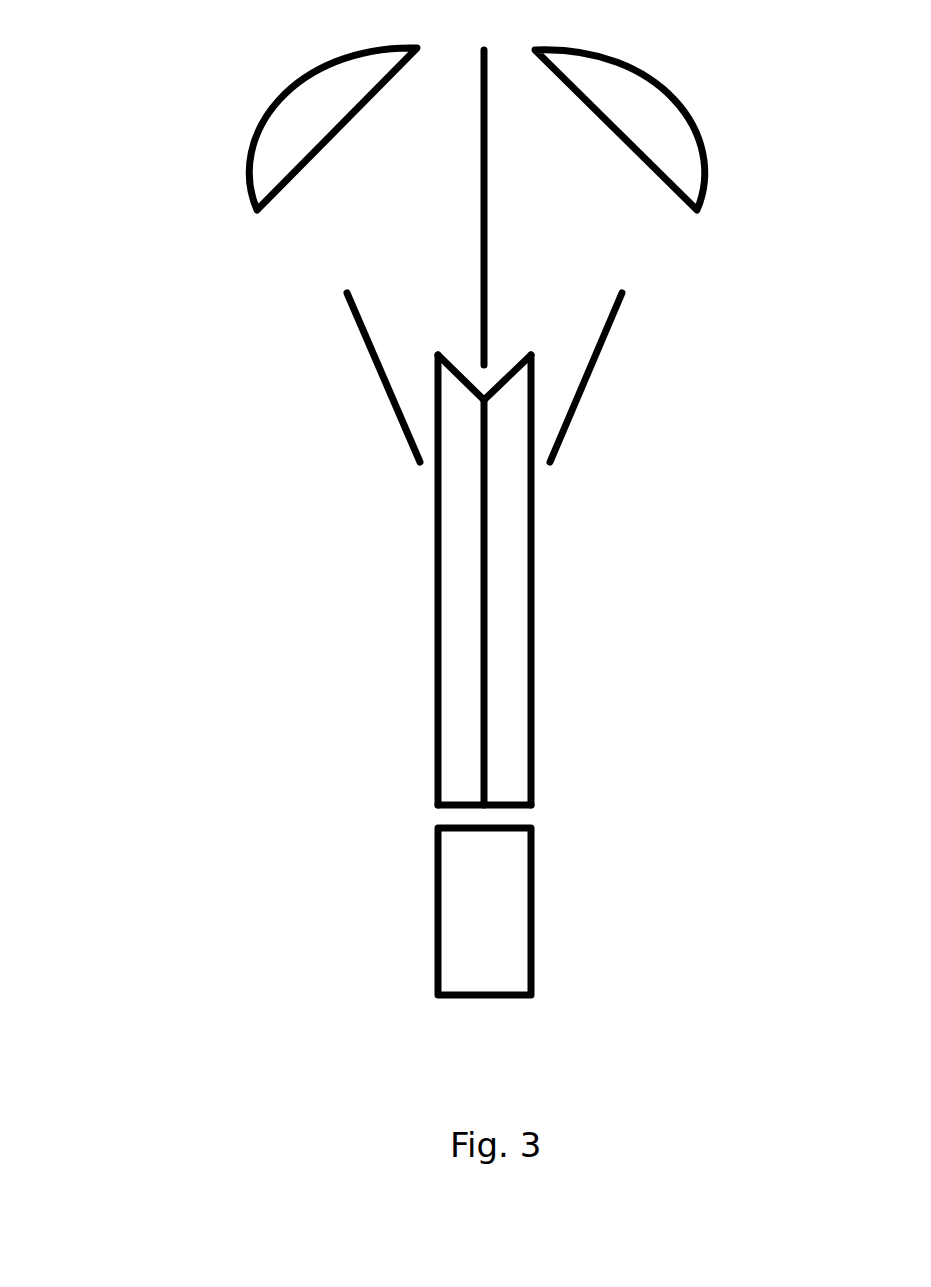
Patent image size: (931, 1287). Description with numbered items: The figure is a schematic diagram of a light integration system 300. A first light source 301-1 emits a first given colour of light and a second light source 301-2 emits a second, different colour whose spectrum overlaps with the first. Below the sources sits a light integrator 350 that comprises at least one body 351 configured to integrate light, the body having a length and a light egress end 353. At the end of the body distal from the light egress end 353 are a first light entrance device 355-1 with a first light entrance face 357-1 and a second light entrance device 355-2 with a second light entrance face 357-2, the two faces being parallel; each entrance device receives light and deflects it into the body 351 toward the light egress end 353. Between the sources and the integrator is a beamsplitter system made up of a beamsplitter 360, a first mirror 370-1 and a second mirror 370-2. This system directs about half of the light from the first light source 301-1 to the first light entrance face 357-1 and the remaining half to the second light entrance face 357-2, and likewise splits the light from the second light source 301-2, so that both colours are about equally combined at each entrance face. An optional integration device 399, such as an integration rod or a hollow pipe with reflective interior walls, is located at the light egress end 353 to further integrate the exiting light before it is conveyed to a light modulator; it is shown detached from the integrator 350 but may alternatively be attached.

The system 300 is at (167, 978).
The first light source 301-1 is at (247, 183).
The second light source 301-2 is at (708, 180).
The light integrator 350 is at (474, 567).
The body 351 is at (525, 632).
The light egress end 353 is at (530, 808).
The first light entrance device 355-1 is at (456, 395).
The second light entrance device 355-2 is at (509, 395).
The first light entrance face 357-1 is at (437, 372).
The second light entrance face 357-2 is at (532, 372).
The beamsplitter 360 is at (486, 50).
The first mirror 370-1 is at (353, 317).
The second mirror 370-2 is at (618, 317).
The integration device 399 is at (442, 923).